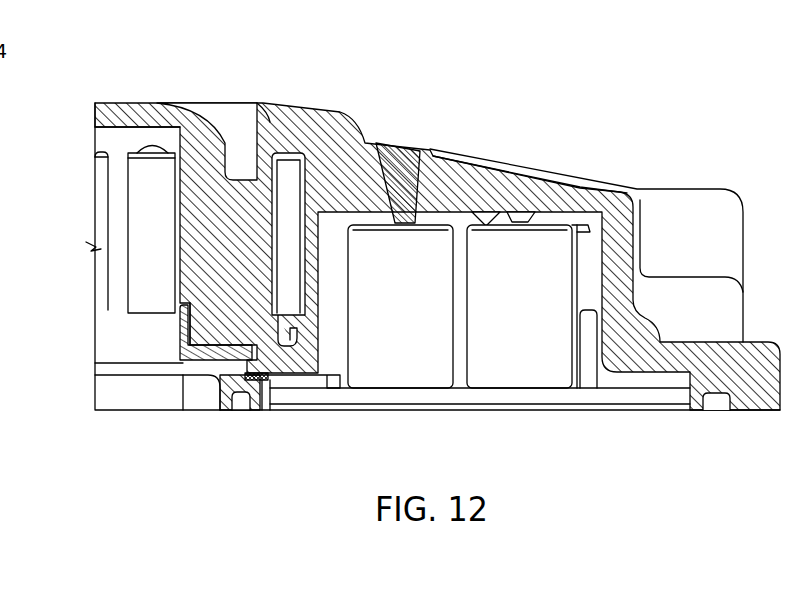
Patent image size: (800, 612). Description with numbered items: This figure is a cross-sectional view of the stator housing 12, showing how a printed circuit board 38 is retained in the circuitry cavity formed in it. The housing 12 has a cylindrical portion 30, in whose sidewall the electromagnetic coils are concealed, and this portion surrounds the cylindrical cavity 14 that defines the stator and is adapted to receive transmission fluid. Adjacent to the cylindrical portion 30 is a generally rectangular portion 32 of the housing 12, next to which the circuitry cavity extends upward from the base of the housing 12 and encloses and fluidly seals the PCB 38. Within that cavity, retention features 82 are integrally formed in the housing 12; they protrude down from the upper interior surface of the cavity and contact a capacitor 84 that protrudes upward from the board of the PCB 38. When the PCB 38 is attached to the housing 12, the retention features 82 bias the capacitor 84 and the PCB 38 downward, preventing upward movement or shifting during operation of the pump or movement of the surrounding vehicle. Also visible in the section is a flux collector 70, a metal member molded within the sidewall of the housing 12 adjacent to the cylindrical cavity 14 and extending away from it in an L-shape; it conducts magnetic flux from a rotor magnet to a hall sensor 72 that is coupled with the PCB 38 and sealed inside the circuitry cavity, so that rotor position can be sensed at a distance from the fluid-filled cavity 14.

The housing 12 is at (437, 80).
The cylindrical cavity 14 is at (103, 325).
The cylindrical portion 30 is at (188, 103).
The generally rectangular portion 32 is at (505, 160).
The printed circuit board 38 is at (593, 400).
The flux collector 70 is at (176, 348).
The hall sensor 72 is at (268, 382).
The retention features 82 is at (400, 215).
The capacitor 84 is at (403, 365).